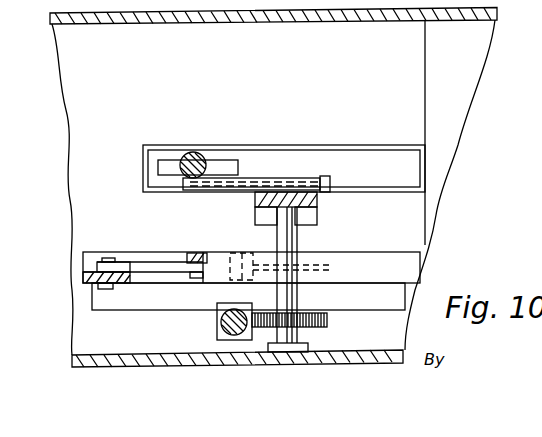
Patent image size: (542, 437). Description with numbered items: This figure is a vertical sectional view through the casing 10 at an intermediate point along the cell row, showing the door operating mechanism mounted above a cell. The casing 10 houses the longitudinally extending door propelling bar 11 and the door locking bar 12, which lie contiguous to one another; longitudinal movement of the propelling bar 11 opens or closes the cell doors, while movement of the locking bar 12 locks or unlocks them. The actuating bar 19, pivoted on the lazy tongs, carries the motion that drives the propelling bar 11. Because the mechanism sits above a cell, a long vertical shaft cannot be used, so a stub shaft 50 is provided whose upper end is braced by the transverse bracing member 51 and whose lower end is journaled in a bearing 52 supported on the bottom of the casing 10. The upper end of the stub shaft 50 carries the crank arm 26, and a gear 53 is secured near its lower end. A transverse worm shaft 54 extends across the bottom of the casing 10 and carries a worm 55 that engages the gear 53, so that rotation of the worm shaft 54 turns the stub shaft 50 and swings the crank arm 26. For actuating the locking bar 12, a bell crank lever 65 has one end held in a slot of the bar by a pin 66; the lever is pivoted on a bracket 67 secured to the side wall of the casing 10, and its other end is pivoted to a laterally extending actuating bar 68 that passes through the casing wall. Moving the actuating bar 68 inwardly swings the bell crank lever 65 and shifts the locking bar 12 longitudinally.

The casing 10 is at (148, 26).
The actuating bar 19 is at (405, 180).
The crank arms 26 is at (267, 188).
The transverse bracing member 51 is at (317, 199).
The stub shafts 50 is at (297, 238).
The door locking bar 12 is at (373, 260).
The door propelling bar 11 is at (362, 300).
The bell crank lever 65 is at (155, 258).
The pin 66 is at (108, 262).
The bracket 67 is at (92, 287).
The actuating bar 68 is at (220, 238).
The worms 55 is at (217, 322).
The gears 53 is at (322, 331).
The worm shaft 54 is at (222, 348).
The bearings 52 is at (287, 352).